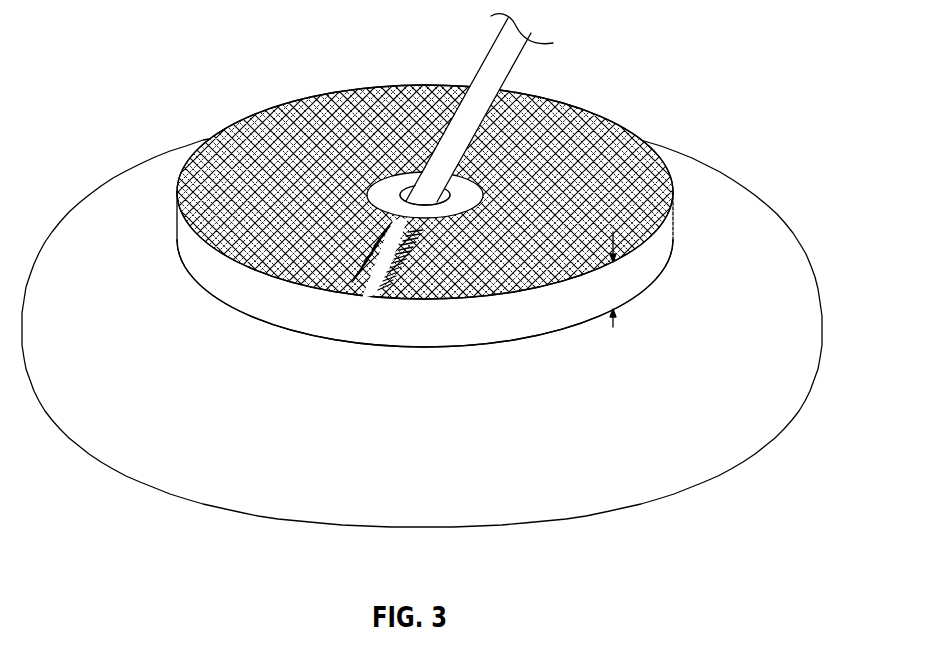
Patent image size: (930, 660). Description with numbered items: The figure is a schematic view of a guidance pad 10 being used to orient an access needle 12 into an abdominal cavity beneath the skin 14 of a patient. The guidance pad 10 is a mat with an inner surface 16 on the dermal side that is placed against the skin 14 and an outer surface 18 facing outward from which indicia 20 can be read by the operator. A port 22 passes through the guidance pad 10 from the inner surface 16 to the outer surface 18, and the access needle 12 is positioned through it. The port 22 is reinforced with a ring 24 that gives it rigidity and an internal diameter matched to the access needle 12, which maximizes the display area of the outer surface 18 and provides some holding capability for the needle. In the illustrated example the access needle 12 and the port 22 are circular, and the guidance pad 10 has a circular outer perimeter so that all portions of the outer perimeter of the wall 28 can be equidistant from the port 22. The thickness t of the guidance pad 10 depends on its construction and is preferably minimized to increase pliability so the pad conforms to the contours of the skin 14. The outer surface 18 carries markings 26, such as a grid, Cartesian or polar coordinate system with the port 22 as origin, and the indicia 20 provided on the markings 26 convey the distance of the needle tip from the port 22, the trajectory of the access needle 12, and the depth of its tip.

The guidance pad 10 is at (591, 141).
The access needle 12 is at (485, 49).
The skin 14 is at (235, 513).
The inner surface 16 is at (207, 288).
The outer surface 18 is at (177, 240).
The indicia 20 is at (404, 271).
The port 22 is at (408, 197).
The ring 24 is at (377, 197).
The markings 26 is at (536, 243).
The wall 28 is at (655, 245).
The thickness t is at (613, 327).